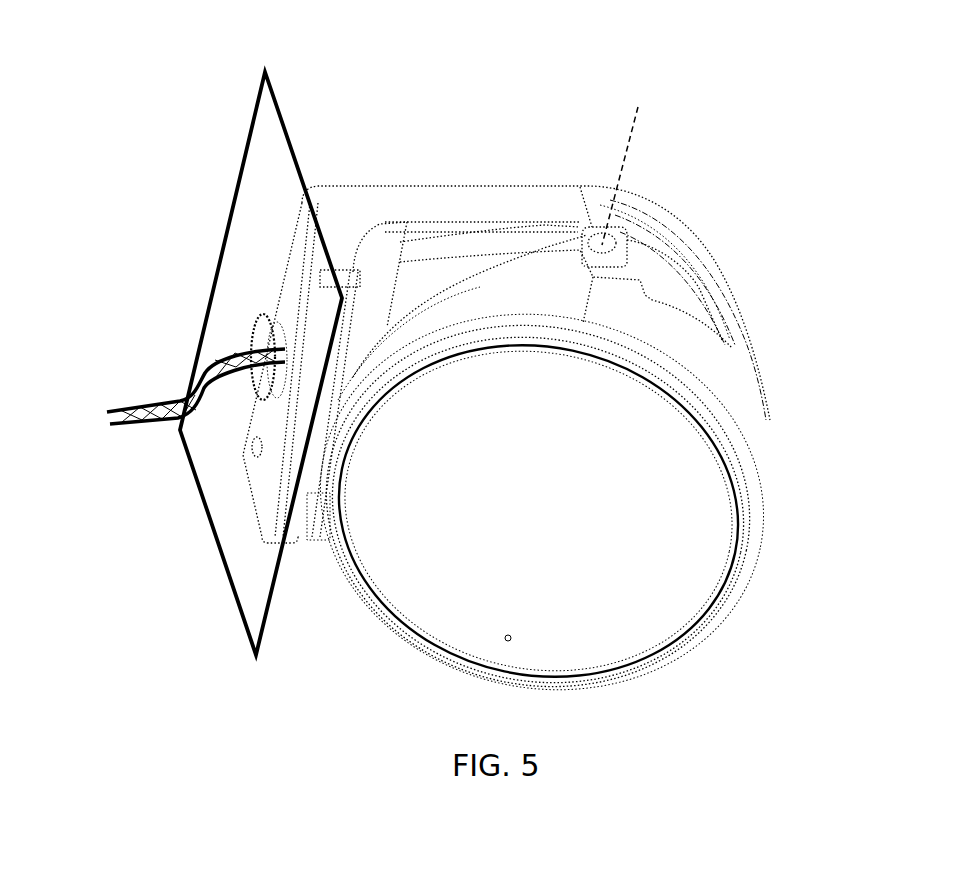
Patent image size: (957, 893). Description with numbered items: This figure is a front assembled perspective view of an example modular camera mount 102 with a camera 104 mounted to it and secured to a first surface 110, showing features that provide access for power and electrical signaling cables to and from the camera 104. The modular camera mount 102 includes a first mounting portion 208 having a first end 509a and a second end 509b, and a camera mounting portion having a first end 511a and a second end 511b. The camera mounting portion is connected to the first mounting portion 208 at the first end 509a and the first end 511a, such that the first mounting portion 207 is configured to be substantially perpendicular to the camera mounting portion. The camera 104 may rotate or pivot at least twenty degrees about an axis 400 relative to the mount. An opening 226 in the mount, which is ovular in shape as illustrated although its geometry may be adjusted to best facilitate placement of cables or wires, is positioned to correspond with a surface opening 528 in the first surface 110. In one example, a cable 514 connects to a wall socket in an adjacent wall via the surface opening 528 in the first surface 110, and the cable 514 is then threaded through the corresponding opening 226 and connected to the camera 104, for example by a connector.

The modular camera mount 102 is at (535, 100).
The camera 104 is at (805, 509).
The first surface 110 is at (282, 606).
The first mounting portion 207 is at (325, 150).
The first mounting portion 208 is at (460, 250).
The opening 226 is at (260, 386).
The axis 400 is at (640, 130).
The first end 509a is at (333, 190).
The second end 509b is at (338, 266).
The first end 511a is at (360, 200).
The second end 511b is at (700, 240).
The cable 514 is at (117, 406).
The surface opening 528 is at (255, 323).